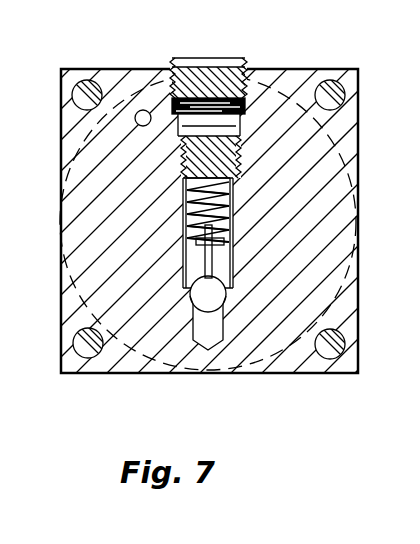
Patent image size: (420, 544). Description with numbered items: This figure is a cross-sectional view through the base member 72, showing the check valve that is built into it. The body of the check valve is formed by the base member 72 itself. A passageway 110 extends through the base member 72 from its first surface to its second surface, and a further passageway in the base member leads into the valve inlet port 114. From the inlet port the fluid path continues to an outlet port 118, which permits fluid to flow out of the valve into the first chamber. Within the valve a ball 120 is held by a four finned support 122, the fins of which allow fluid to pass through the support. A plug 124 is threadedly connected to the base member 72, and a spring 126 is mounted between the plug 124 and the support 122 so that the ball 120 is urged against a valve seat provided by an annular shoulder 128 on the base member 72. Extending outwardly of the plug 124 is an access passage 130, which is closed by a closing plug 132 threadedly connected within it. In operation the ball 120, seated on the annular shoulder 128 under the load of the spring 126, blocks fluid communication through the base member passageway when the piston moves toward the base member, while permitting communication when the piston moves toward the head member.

The base member 72 is at (293, 70).
The passageway 110 is at (137, 124).
The valve inlet port 114 is at (213, 328).
The outlet port 118 is at (183, 197).
The ball 120 is at (200, 296).
The four finned support 122 is at (230, 262).
The plug 124 is at (240, 155).
The spring 126 is at (236, 188).
The annular shoulder 128 is at (228, 300).
The access passage 130 is at (244, 112).
The closing plug 132 is at (224, 58).